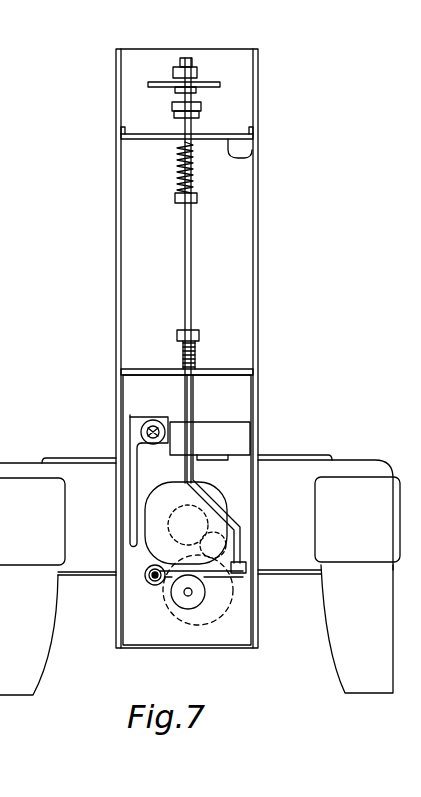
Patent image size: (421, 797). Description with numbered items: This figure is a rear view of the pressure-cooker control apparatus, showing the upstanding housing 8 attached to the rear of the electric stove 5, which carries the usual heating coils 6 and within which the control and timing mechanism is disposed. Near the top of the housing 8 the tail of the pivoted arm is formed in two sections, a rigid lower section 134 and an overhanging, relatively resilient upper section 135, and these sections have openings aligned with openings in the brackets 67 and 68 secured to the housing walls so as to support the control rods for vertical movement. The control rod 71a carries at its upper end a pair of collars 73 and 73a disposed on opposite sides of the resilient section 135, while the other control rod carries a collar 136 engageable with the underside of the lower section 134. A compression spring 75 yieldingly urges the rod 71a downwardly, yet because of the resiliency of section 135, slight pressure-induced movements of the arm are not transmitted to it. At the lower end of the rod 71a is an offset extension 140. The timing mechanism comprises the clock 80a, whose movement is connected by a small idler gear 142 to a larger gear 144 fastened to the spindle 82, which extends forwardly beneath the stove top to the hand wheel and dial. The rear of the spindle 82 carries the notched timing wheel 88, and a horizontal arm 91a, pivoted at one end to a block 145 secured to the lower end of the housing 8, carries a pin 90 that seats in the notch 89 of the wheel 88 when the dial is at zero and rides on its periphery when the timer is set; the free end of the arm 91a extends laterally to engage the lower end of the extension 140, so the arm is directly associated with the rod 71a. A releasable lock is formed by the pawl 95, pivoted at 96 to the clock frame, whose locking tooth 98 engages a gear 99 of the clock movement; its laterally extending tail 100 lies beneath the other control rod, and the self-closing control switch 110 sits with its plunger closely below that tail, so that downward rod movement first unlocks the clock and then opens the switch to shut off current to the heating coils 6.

The electric stove 5 is at (200, 586).
The heating coils 6 is at (72, 463).
The housing 8 is at (258, 290).
The bracket 67 is at (252, 150).
The bracket 68 is at (230, 369).
The control rod 71a is at (191, 250).
The collar 73 is at (191, 70).
The collar 73a is at (197, 90).
The compression spring 75 is at (191, 172).
The clock 80a is at (170, 496).
The spindle 82 is at (186, 593).
The timing wheel 88 is at (206, 589).
The notch 89 is at (175, 590).
The pin 90 is at (192, 604).
The horizontal arm 91a is at (246, 566).
The pawl 95 is at (130, 415).
The pivot 96 is at (155, 420).
The locking tooth 98 is at (138, 548).
The gear 99 is at (140, 535).
The tail 100 is at (193, 422).
The control switch 110 is at (210, 441).
The lower section 134 is at (201, 107).
The upper section 135 is at (215, 82).
The collar 136 is at (199, 115).
The offset extension 140 is at (241, 543).
The idler gear 142 is at (236, 518).
The gear 144 is at (236, 616).
The block 145 is at (148, 583).